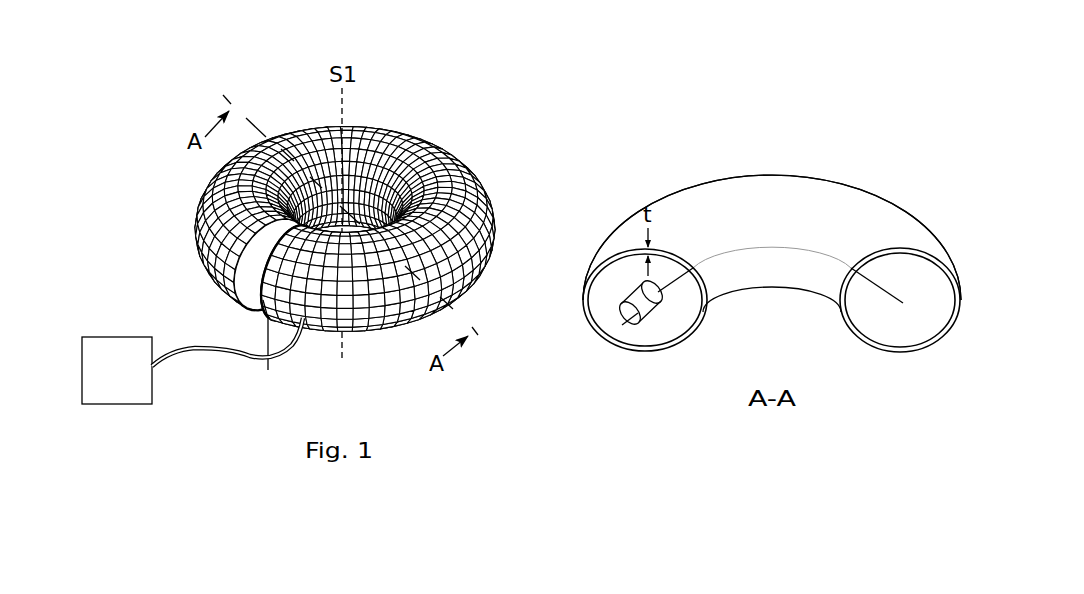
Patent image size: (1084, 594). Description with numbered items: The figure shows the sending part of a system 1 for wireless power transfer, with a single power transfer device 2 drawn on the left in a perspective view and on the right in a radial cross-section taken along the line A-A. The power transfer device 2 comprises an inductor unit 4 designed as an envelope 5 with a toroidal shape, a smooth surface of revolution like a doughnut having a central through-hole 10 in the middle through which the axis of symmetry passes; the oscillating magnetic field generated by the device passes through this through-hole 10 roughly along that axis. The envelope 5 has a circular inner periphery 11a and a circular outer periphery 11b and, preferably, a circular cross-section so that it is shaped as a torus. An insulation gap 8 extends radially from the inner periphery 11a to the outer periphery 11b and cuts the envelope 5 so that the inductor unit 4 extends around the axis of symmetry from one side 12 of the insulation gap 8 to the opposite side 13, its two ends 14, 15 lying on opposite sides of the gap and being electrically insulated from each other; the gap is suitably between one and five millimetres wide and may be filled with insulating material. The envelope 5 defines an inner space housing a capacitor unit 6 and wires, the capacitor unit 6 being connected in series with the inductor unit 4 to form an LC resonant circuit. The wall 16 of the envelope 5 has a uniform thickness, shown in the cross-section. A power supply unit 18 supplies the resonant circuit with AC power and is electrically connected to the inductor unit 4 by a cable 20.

The system 1 is at (150, 174).
The power transfer device 2 is at (458, 142).
The inductor unit 4 is at (376, 150).
The envelope 5 is at (190, 240).
The capacitor unit 6 is at (643, 318).
The insulation gap 8 is at (265, 292).
The through-hole 10 is at (336, 185).
The inner periphery 11a is at (392, 192).
The outer periphery 11b is at (468, 266).
The side of the insulation gap 12 is at (262, 307).
The opposite side of the insulation gap 13 is at (261, 357).
The end of the inductor unit 14 is at (248, 276).
The end of the inductor unit 15 is at (290, 293).
The wall 16 is at (592, 324).
The power supply unit 18 is at (98, 355).
The cable 20 is at (184, 364).